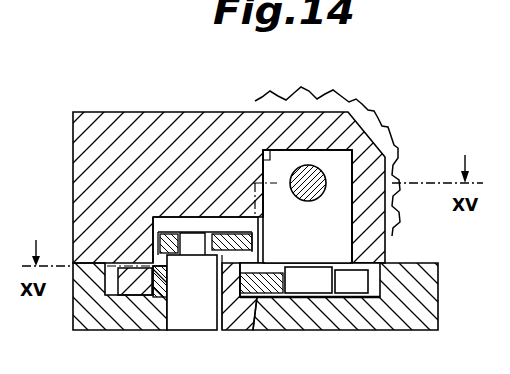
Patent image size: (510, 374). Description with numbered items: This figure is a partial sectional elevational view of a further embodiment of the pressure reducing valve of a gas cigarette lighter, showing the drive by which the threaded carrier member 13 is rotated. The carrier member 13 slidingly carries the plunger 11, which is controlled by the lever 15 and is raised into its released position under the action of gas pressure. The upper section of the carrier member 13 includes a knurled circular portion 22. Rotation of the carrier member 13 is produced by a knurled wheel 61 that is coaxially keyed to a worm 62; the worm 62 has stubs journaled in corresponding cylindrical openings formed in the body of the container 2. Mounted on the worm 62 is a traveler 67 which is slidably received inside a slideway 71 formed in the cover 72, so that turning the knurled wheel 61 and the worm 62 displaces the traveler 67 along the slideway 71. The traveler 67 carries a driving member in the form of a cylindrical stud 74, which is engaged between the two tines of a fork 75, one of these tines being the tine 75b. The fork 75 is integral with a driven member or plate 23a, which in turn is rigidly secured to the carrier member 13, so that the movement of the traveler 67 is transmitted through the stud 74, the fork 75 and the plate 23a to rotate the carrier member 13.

The container 2 is at (425, 298).
The plunger 11 is at (195, 318).
The threaded carrier member 13 is at (162, 308).
The lever 15 is at (165, 243).
The knurled circular portion 22 is at (152, 300).
The plate 23a is at (135, 270).
The knurled wheel 61 is at (358, 103).
The worm 62 is at (327, 177).
The traveler 67 is at (338, 221).
The slideway 71 is at (262, 145).
The cover 72 is at (125, 130).
The cylindrical stud 74 is at (318, 285).
The fork 75 is at (270, 285).
The tine 75b is at (357, 286).